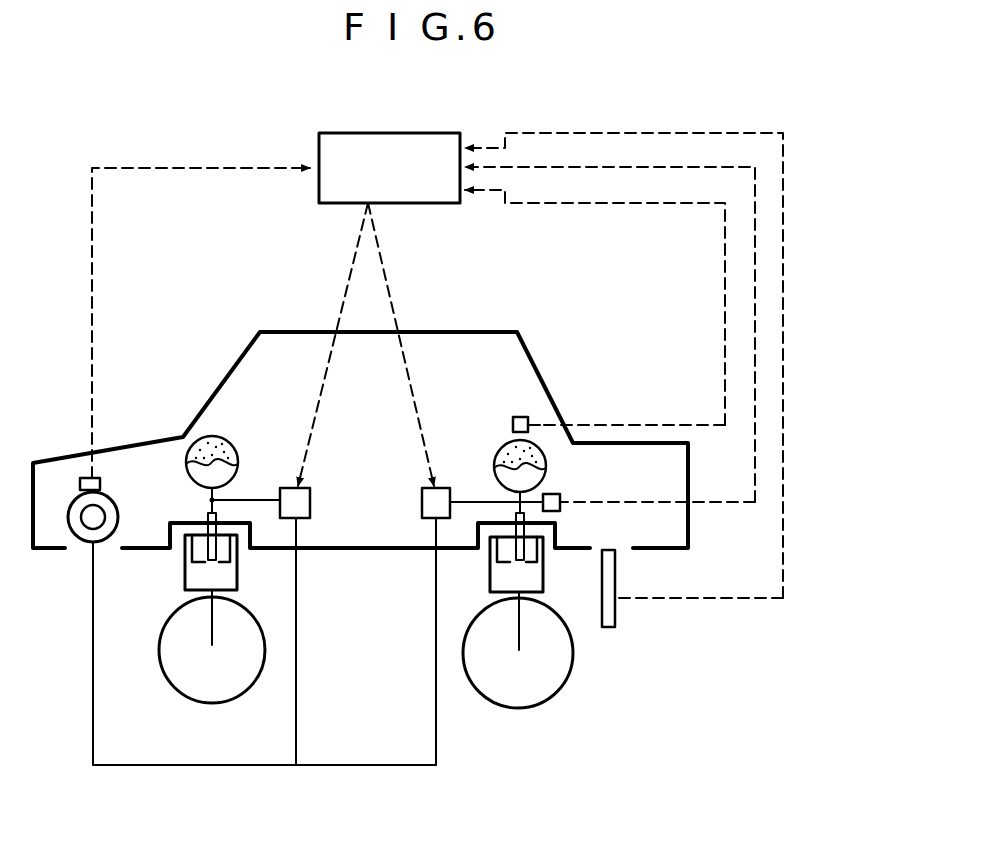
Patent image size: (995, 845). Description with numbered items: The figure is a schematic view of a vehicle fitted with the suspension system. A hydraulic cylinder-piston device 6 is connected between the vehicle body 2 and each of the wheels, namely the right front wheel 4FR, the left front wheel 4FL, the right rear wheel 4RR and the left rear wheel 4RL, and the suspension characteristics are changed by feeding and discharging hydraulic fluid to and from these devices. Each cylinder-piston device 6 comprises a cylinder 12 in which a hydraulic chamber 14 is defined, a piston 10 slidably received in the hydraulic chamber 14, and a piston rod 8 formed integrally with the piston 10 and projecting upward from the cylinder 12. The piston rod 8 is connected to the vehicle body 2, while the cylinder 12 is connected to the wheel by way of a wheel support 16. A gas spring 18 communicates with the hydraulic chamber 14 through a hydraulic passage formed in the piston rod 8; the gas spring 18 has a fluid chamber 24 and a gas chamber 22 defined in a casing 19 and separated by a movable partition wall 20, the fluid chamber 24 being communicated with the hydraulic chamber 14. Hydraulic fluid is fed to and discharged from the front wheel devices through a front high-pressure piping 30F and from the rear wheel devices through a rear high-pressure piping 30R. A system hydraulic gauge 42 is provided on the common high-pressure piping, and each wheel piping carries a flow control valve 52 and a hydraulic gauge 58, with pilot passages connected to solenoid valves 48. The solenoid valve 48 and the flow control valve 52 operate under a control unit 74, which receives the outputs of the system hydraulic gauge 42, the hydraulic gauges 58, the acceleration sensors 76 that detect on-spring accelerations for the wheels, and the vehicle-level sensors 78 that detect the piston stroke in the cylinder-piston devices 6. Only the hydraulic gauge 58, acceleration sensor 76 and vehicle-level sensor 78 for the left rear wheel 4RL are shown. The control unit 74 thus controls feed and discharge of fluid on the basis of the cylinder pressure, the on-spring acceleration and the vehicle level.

The vehicle body 2 is at (450, 332).
The control unit 74 is at (368, 133).
The system hydraulic gauge 42 is at (112, 478).
The gas spring 18 is at (202, 432).
The casing 19 is at (182, 435).
The gas chamber 22 is at (220, 440).
The movable partition wall 20 is at (232, 447).
The fluid chamber 24 is at (225, 483).
The piston rod 8 is at (198, 530).
The piston 10 is at (183, 553).
The hydraulic cylinder-piston device 6 is at (355, 567).
The cylinder 12 is at (237, 580).
The hydraulic chamber 14 is at (166, 616).
The wheel support 16 is at (392, 681).
The left front wheel 4FL is at (202, 671).
The right front wheel 4FR is at (176, 690).
The left rear wheel 4RL is at (553, 681).
The right rear wheel 4RR is at (540, 708).
The solenoid valve 48 is at (365, 495).
The flow control valve 52 is at (306, 488).
The front high-pressure piping 30F is at (297, 580).
The rear high-pressure piping 30R is at (436, 615).
The hydraulic gauge 58 is at (553, 494).
The acceleration sensor 76 is at (522, 417).
The vehicle-level sensor 78 is at (612, 627).